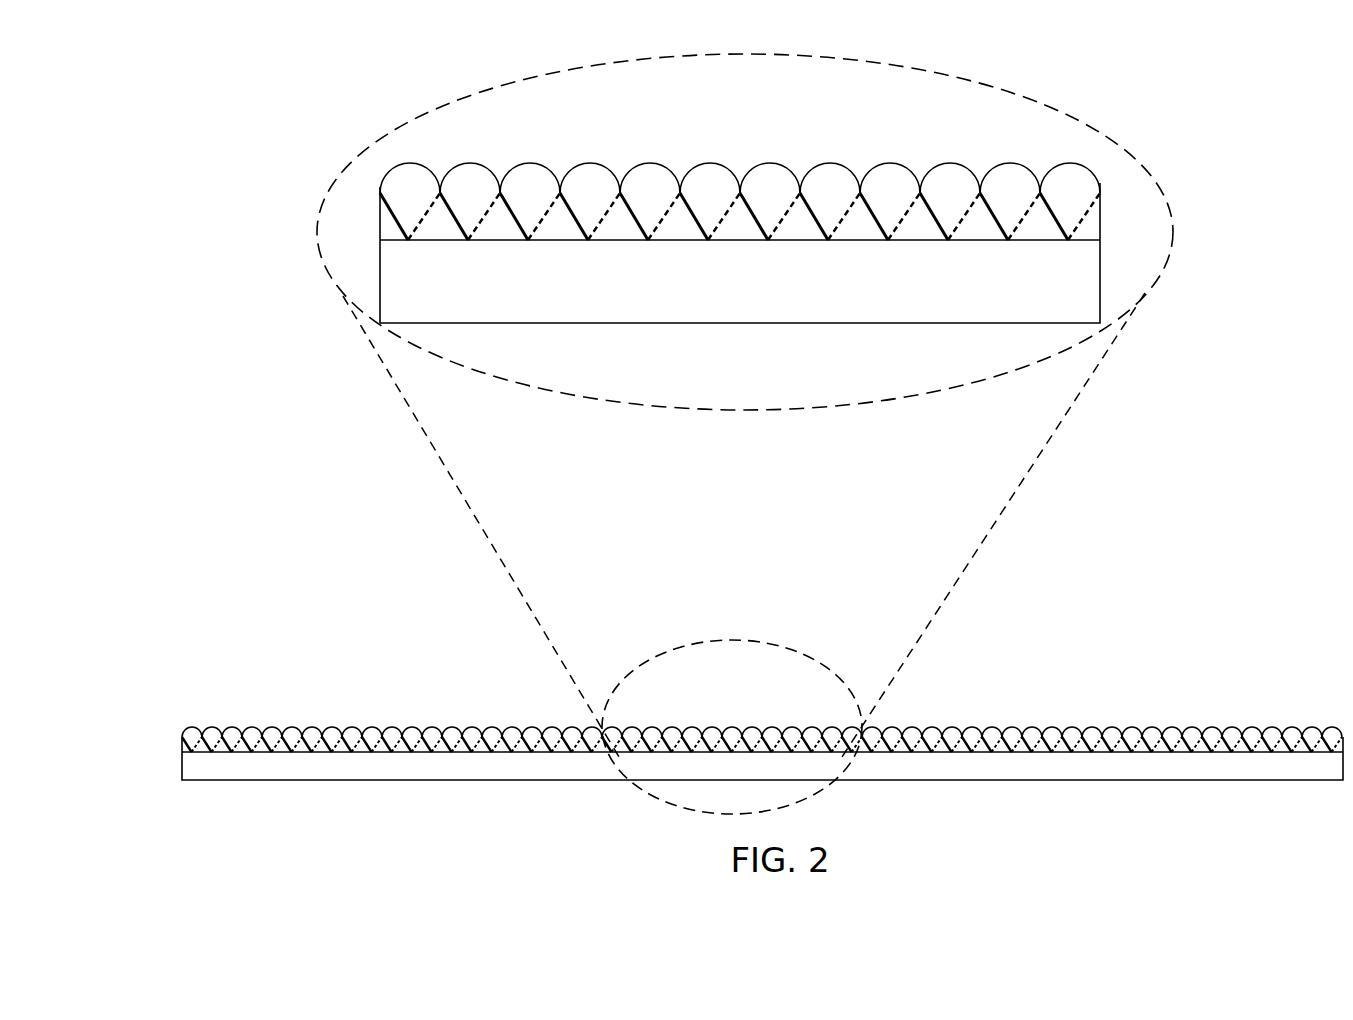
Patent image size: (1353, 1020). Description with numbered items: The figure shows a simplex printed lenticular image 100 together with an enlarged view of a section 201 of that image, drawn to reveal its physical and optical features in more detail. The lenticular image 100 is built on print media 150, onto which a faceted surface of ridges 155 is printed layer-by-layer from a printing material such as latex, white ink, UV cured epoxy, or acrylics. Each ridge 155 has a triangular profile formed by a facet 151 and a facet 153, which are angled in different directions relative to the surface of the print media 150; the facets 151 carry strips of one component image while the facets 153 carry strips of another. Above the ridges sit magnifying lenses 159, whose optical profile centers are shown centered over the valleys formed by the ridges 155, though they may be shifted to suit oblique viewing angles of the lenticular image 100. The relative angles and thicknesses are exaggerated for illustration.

The lenticular image 100 is at (327, 549).
The print media 150 is at (380, 250).
The facet 151 is at (490, 213).
The facet 153 is at (866, 198).
The ridge 155 is at (622, 233).
The magnifying lens 159 is at (710, 162).
The section 201 is at (433, 110).